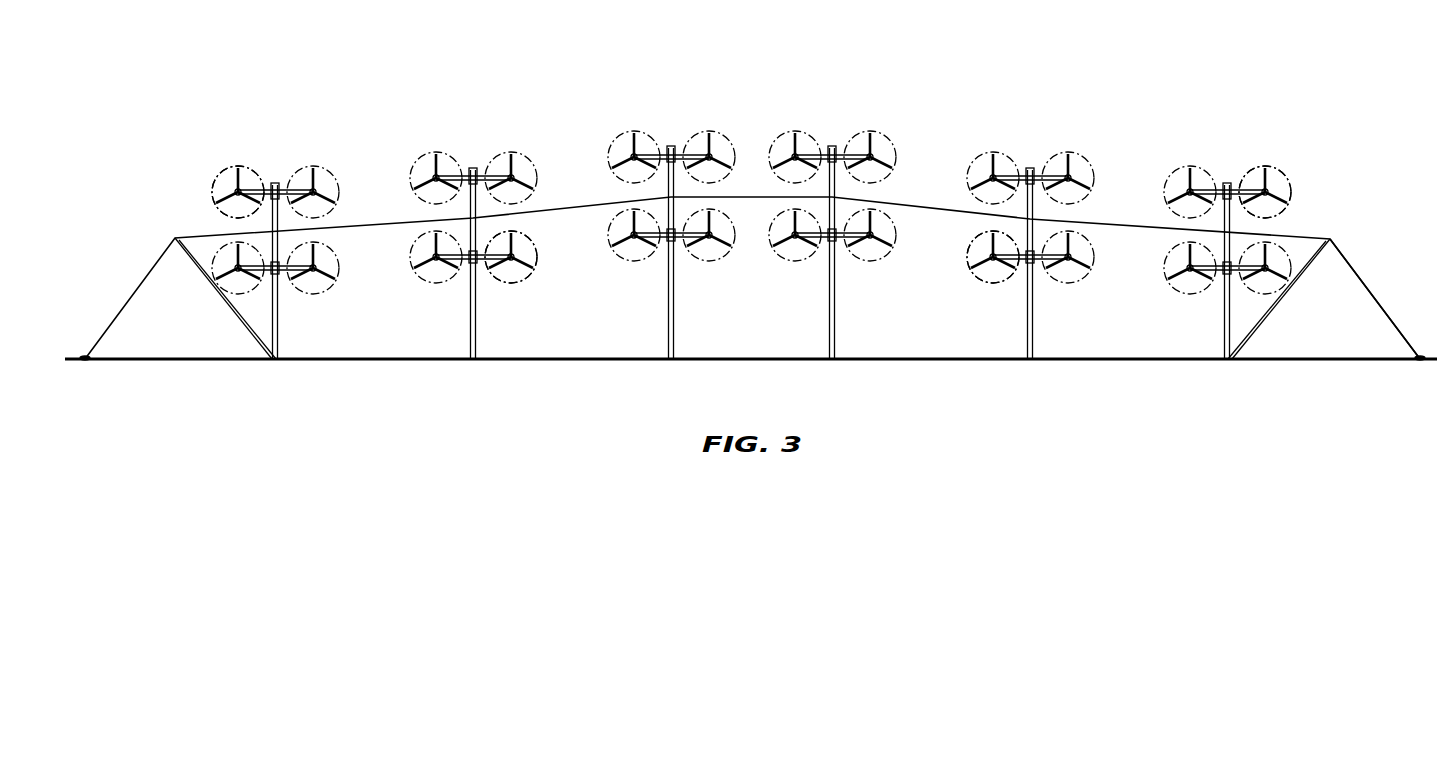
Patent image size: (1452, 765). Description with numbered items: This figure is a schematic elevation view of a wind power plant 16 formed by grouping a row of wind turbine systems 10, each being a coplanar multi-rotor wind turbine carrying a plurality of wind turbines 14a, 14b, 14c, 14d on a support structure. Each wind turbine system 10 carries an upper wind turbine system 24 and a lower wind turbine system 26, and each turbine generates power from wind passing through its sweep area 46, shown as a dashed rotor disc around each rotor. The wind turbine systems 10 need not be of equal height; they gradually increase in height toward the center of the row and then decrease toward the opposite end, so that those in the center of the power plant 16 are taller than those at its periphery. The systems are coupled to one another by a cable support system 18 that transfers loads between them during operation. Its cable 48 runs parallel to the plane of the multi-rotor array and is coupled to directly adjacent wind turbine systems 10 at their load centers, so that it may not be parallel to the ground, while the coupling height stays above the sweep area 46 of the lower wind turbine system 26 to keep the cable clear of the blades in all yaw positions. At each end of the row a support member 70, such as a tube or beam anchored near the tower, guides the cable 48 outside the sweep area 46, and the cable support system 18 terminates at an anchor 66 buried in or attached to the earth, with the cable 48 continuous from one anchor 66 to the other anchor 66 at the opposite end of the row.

The wind power plant 16 is at (172, 95).
The wind turbine system 10 is at (278, 148).
The upper wind turbine system 24 is at (405, 165).
The lower wind turbine system 26 is at (346, 283).
The wind turbine 14a is at (210, 197).
The wind turbine 14b is at (1295, 192).
The wind turbine 14c is at (962, 262).
The wind turbine 14d is at (540, 262).
The sweep area 46 is at (217, 176).
The cable 48 is at (140, 284).
The anchor 66 is at (86, 356).
The support member 70 is at (216, 298).
The cable support system 18 is at (1382, 289).